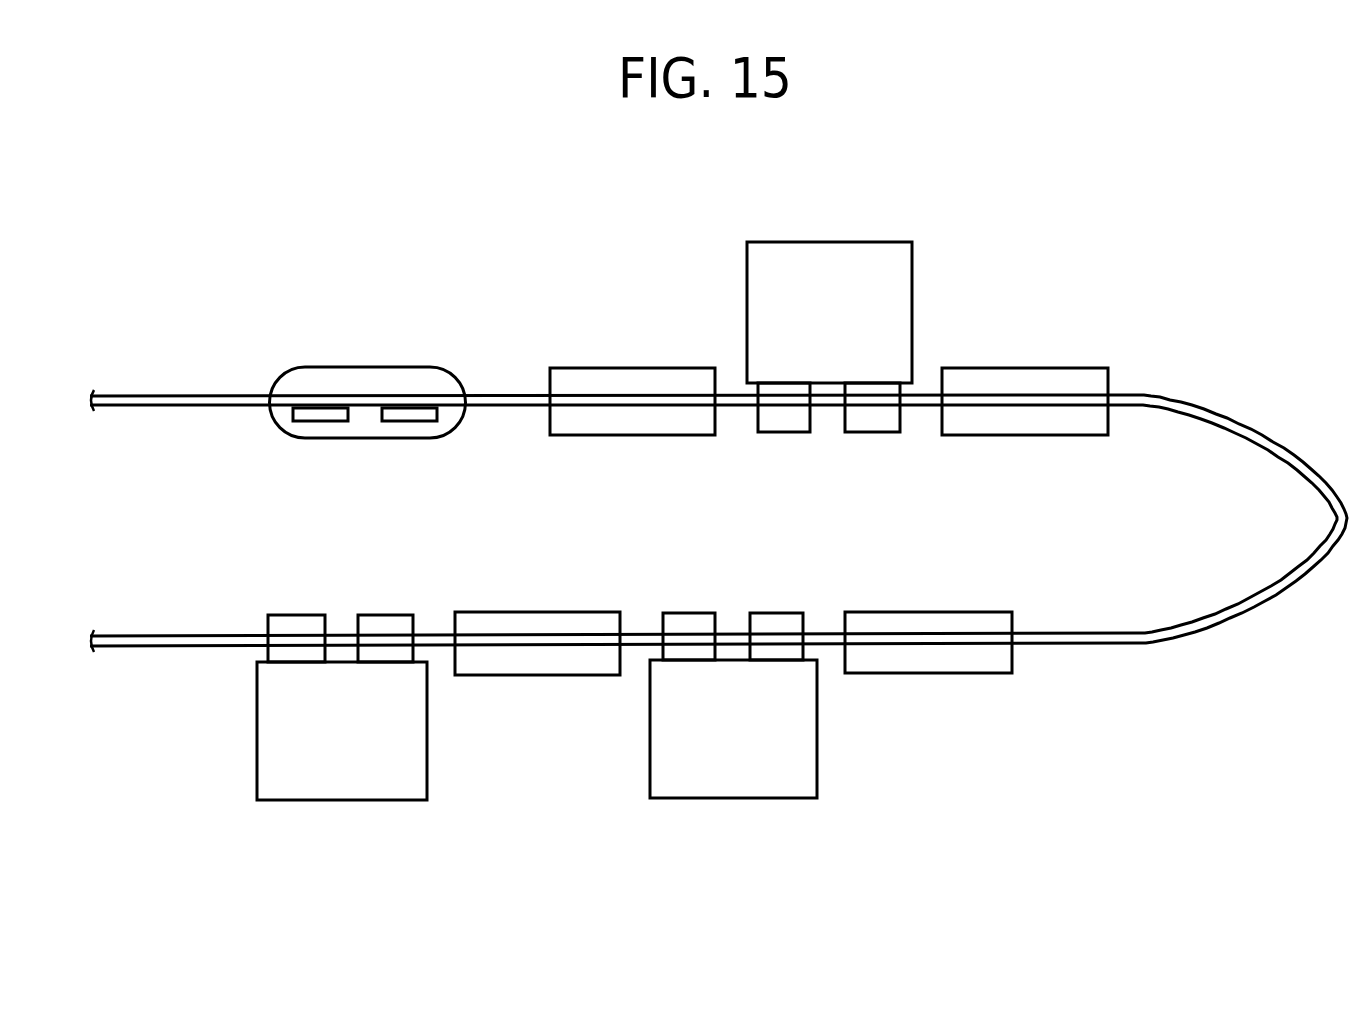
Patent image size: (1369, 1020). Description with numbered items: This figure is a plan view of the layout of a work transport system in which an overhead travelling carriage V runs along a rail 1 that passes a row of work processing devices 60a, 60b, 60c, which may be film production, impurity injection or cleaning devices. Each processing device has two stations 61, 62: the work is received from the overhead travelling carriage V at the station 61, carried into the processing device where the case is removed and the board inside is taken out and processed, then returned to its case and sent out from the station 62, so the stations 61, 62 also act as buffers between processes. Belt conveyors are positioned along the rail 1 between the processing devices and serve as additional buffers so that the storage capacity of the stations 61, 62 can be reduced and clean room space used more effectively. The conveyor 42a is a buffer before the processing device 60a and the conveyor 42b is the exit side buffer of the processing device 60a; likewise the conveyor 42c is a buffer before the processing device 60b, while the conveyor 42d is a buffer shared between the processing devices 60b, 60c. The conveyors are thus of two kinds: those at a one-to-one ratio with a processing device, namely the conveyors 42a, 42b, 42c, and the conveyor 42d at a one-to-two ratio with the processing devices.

The rail 1 is at (152, 410).
The overhead travelling carriage V is at (382, 360).
The conveyor 42a is at (655, 368).
The conveyor 42b is at (1058, 368).
The conveyor 42c is at (942, 673).
The conveyor 42d is at (560, 675).
The processing device 60a is at (912, 278).
The processing device 60b is at (772, 798).
The processing device 60c is at (352, 800).
The station 61 is at (783, 432).
The station 62 is at (880, 432).